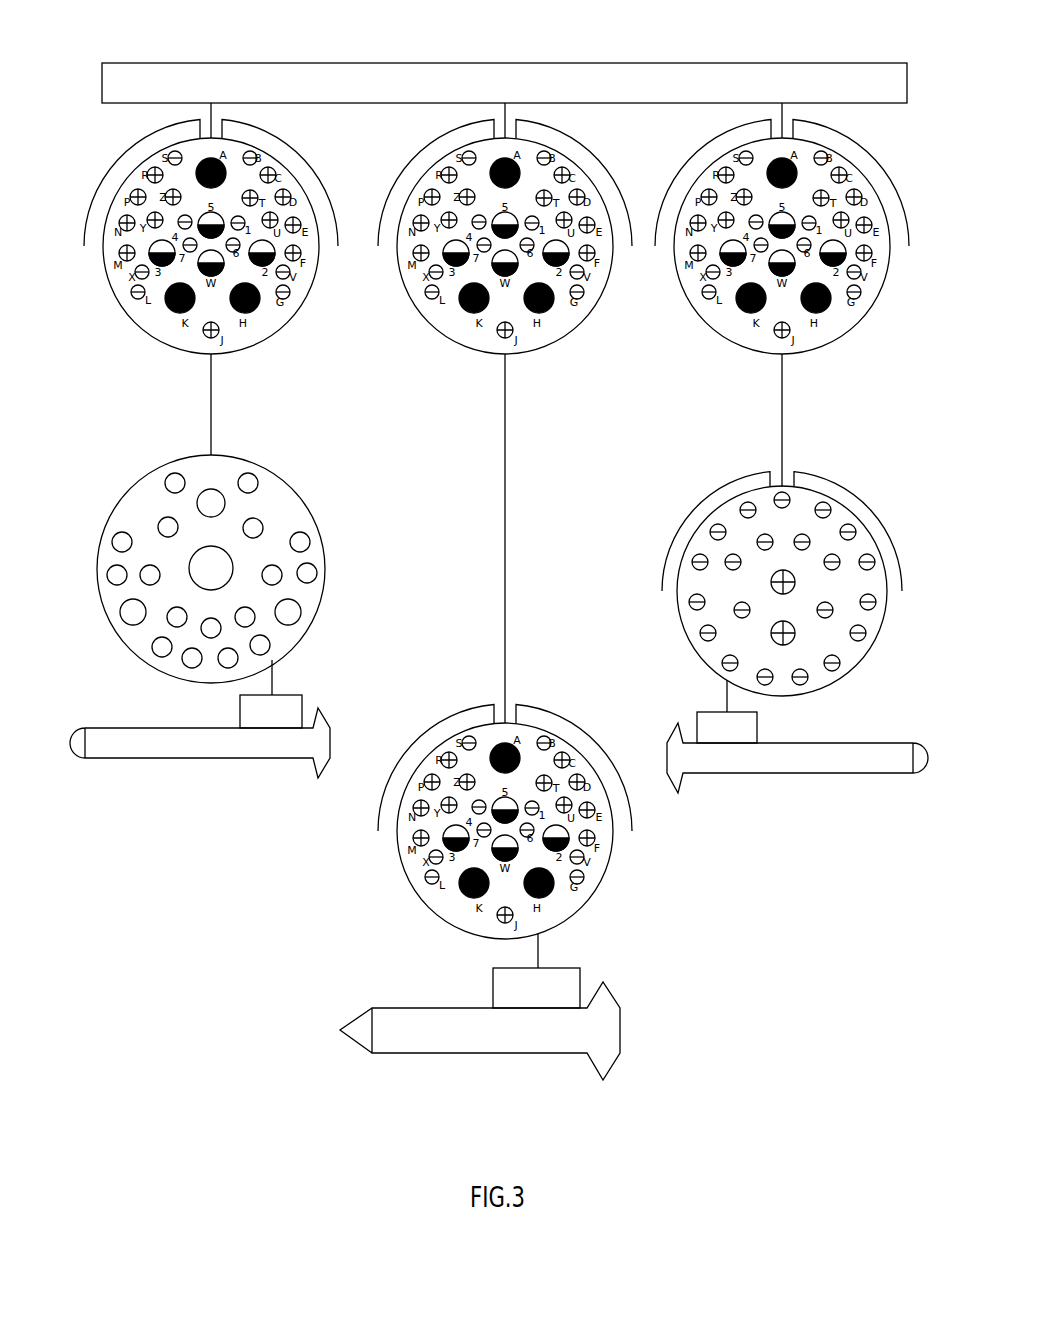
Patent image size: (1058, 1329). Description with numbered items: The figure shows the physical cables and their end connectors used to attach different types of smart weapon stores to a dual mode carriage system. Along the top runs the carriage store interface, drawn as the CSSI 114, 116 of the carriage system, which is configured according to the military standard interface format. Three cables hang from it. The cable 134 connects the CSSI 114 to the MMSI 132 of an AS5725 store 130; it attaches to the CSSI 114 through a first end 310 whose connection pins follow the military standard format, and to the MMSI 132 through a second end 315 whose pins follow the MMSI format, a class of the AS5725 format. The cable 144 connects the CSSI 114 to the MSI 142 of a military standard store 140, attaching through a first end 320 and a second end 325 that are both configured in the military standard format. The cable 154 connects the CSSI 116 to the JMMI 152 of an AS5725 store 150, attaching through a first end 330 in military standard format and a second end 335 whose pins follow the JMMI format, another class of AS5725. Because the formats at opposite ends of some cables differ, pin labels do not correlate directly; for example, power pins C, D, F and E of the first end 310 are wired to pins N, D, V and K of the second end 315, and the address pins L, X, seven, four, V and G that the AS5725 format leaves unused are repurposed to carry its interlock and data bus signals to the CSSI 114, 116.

The CSSI 114 is at (703, 63).
The CSSI 116 is at (504, 58).
The AS5725 store 130 is at (115, 728).
The Miniature Munitions Store Interface (MMSI) 132 is at (288, 695).
The cable 134 is at (212, 422).
The MIL-STD-1760 store 140 is at (455, 1055).
The Mission Store Interface (MSI) 142 is at (567, 968).
The cable 144 is at (505, 500).
The AS5725 store 150 is at (822, 775).
The Joint Miniature Munitions Interface (JMMI) 152 is at (712, 712).
The cable 154 is at (783, 422).
The first end 310 is at (272, 335).
The second end 315 is at (293, 490).
The first end 320 is at (560, 337).
The second end 325 is at (563, 722).
The first end 330 is at (842, 332).
The second end 335 is at (860, 500).